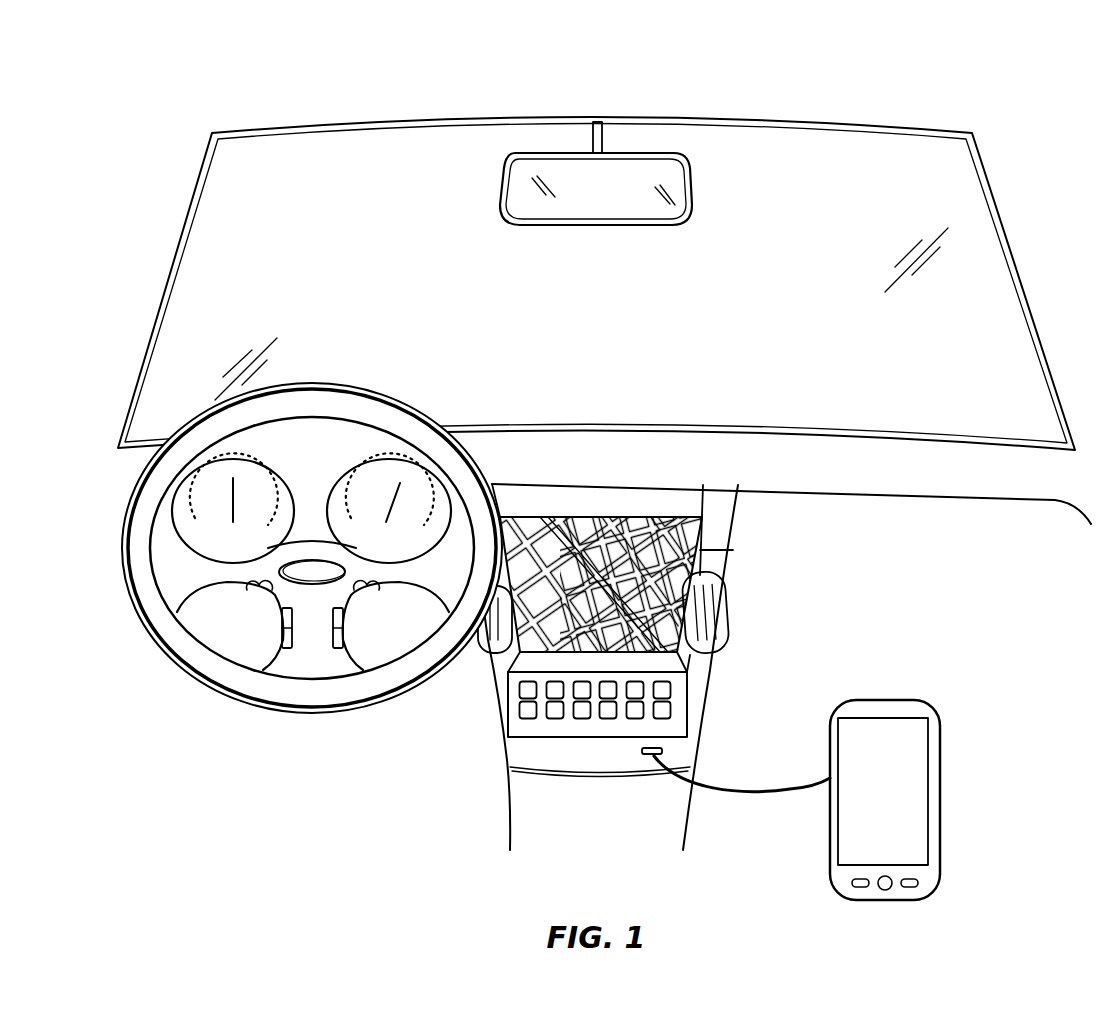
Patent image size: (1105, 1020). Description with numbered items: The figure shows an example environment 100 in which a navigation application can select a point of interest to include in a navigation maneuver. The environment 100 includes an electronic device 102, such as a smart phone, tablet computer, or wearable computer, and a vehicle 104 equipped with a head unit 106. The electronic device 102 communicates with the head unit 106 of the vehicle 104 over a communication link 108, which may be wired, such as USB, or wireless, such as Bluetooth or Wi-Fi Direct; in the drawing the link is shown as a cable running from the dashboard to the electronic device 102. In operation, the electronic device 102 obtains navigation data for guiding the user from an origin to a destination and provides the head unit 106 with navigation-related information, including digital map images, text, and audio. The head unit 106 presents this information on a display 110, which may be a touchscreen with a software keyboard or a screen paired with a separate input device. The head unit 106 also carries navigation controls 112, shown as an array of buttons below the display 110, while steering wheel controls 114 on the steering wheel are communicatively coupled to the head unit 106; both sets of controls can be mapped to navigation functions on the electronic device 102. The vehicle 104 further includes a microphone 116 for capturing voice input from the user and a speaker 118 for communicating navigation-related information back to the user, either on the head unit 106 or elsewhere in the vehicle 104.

The environment 100 is at (569, 463).
The electronic device 102 is at (893, 700).
The vehicle 104 is at (108, 410).
The head unit 106 is at (764, 644).
The communication link 108 is at (741, 776).
The display 110 is at (680, 540).
The navigation controls 112 is at (512, 704).
The steering wheel controls 114 is at (273, 637).
The microphone 116 is at (483, 638).
The speaker 118 is at (712, 610).